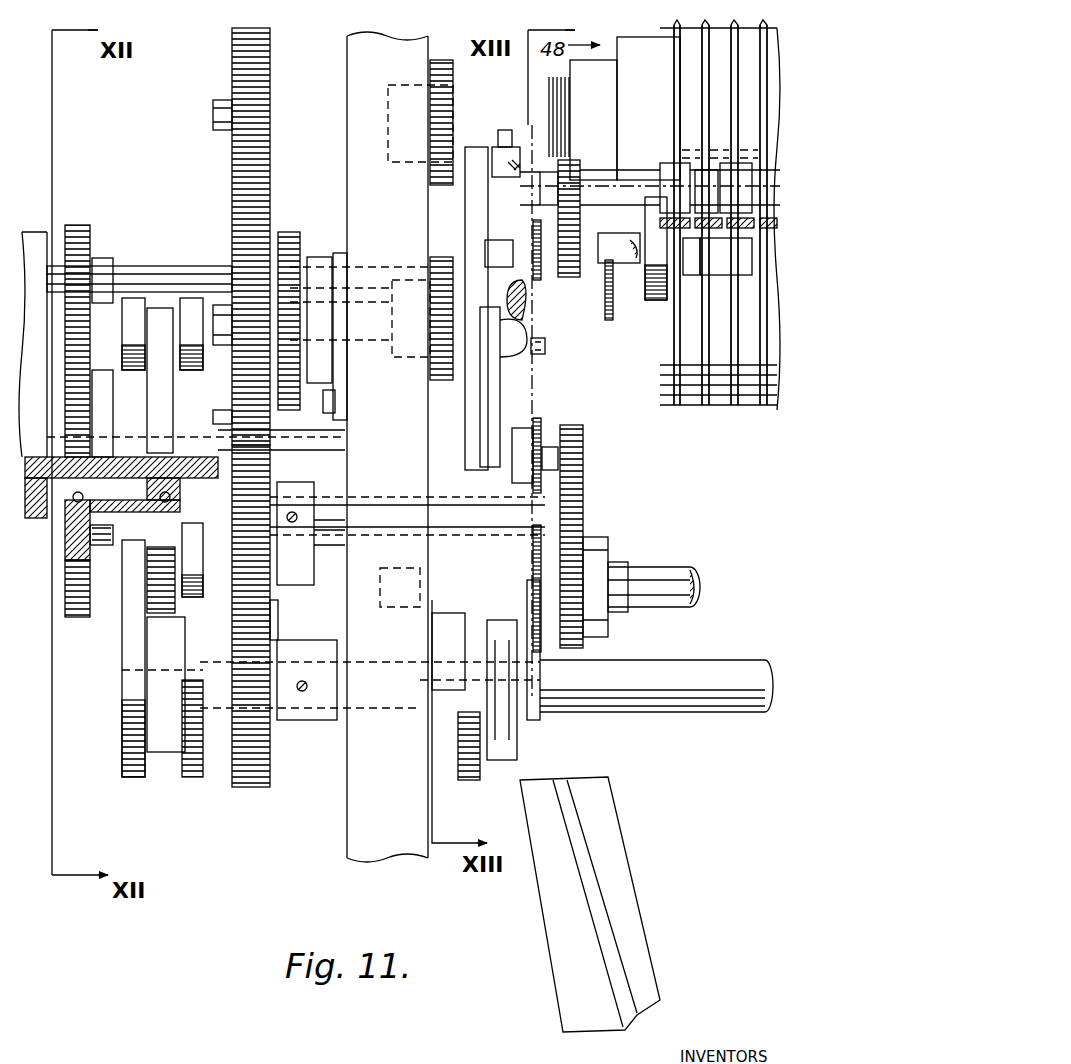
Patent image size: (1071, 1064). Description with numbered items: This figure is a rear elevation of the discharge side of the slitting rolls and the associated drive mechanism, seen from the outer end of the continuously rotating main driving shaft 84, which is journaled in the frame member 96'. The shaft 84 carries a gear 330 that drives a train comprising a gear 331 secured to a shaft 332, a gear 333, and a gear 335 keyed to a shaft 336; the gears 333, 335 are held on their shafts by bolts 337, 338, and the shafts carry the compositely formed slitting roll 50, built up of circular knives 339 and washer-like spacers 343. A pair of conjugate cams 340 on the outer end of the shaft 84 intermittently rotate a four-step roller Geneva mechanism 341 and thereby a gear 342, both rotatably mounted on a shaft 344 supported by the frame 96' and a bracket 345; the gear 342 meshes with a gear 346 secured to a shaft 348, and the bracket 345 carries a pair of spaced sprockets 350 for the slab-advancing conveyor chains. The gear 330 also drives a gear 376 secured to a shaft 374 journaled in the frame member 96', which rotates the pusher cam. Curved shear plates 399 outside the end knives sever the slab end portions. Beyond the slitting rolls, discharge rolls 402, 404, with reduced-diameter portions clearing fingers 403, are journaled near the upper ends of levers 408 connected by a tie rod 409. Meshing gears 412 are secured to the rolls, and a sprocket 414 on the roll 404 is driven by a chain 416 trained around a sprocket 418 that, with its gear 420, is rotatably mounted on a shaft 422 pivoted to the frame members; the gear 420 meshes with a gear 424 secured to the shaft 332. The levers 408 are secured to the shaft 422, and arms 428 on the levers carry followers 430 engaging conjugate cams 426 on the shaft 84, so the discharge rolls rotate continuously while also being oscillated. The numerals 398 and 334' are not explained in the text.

The frame member 96' is at (372, 457).
The shaft 348 is at (128, 266).
The gear 346 is at (73, 225).
The gear 342 is at (76, 618).
The bracket 345 is at (36, 518).
The roller Geneva mechanism 341 is at (160, 308).
The bolt 338 is at (213, 112).
The bolt 337 is at (225, 345).
The gear 333 is at (245, 418).
The gear 335 is at (232, 193).
The gear 330 is at (252, 787).
The gear 398 is at (290, 232).
The bearing 334' is at (401, 338).
The shaft 344 is at (345, 421).
The conjugate cams 340 is at (187, 800).
The shaft 374 is at (312, 570).
The gear 376 is at (278, 634).
The gear 331 is at (250, 618).
The shaft 332 is at (335, 497).
The shaft 336 is at (453, 85).
The levers 408 is at (465, 232).
The tie rod 409 is at (506, 147).
The sprocket 414 is at (533, 249).
The meshing gears 412 is at (578, 200).
The sprockets 350 is at (606, 300).
The curved shear plates 399 is at (650, 300).
The chain 416 is at (546, 347).
The slitting roll 50 is at (795, 420).
The washer-like spacers 343 is at (676, 408).
The circular knives 339 is at (735, 408).
The discharge roll 402 is at (665, 163).
The fingers 403 is at (722, 215).
The discharge roll 404 is at (705, 270).
The gear 424 is at (583, 462).
The gear 420 is at (585, 545).
The shaft 422 is at (645, 567).
The sprocket 418 is at (545, 649).
The main driving shaft 84 is at (728, 705).
The conjugate cams 426 is at (544, 684).
The arms 428 is at (518, 727).
The followers 430 is at (470, 780).